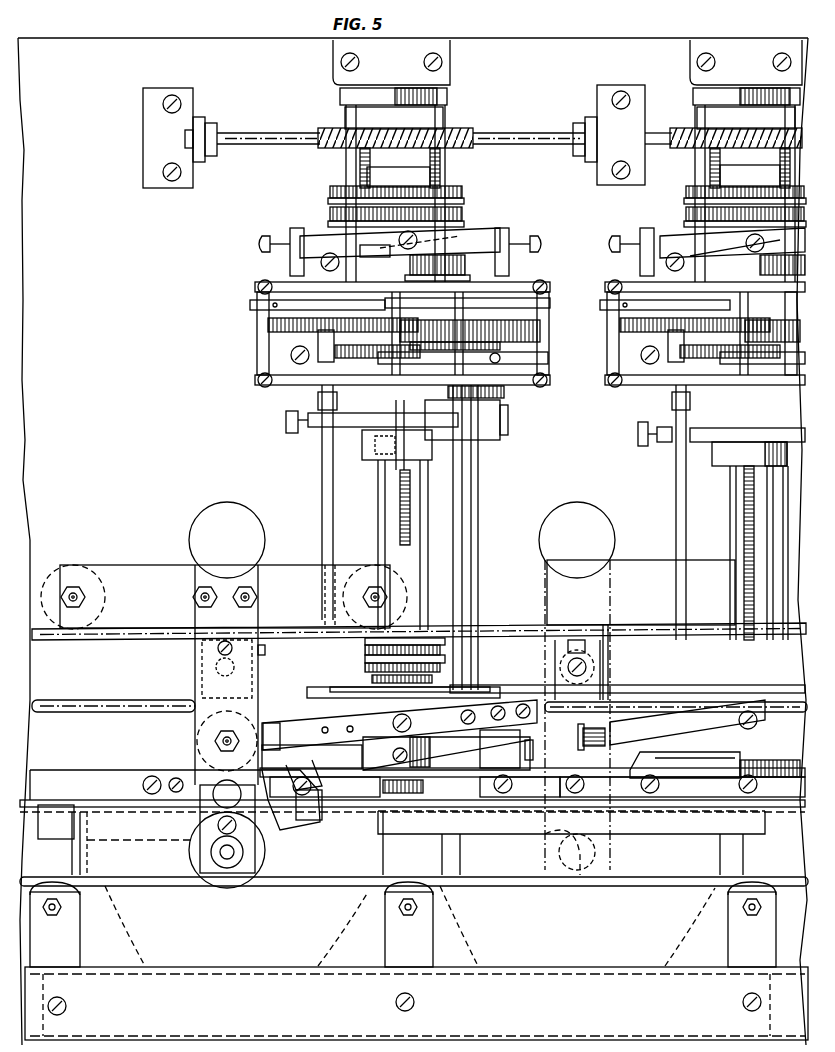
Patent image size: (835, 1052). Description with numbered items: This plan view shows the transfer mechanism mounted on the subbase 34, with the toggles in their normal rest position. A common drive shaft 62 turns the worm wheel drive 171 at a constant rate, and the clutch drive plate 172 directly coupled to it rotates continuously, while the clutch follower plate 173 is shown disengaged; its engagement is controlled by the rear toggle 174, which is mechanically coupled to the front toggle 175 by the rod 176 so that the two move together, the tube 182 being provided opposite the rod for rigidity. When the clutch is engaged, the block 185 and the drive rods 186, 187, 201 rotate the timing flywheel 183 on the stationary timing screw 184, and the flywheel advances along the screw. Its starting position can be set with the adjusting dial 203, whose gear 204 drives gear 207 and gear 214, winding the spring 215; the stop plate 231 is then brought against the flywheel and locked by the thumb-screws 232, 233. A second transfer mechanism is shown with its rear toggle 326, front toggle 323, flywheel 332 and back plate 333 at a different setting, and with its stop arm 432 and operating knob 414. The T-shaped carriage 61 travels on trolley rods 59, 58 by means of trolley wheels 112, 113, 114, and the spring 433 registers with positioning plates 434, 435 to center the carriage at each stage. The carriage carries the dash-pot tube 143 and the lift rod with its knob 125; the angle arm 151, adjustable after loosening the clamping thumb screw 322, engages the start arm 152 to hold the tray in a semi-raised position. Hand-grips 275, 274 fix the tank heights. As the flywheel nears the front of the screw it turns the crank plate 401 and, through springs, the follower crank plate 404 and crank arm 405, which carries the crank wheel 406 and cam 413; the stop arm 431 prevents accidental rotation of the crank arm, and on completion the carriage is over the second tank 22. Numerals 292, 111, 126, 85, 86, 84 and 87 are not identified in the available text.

The subbase 34 is at (154, 42).
The worm wheel drive 171 is at (440, 128).
The drive shaft 62 is at (527, 134).
The clutch drive plate 172 is at (448, 186).
The clutch follower plate 173 is at (448, 214).
The rear toggle 174 is at (440, 236).
The rod 176 is at (470, 262).
The rear toggle 326 is at (690, 253).
The spring 215 is at (255, 305).
The gear 214 is at (282, 326).
The gear 207 is at (335, 350).
The gear 204 is at (535, 332).
The block 185 is at (380, 360).
The adjusting dial 203 is at (500, 392).
The stop plate 231 is at (350, 420).
The thumb-screw 233 is at (290, 428).
The thumb-screw 232 is at (505, 432).
The enclosing tube 182 is at (324, 458).
The timing flywheel 183 is at (368, 452).
The drive rod 201 is at (406, 470).
The drive rod 186 is at (378, 492).
The drive rod 187 is at (440, 483).
The timing screw 184 is at (410, 516).
The back plate 333 is at (703, 428).
The flywheel 332 is at (722, 466).
The hand-grip 275 is at (240, 506).
The hand-grip 274 is at (590, 506).
The trolley wheel 112 is at (54, 578).
The carriage 61 is at (140, 570).
The trolley wheel 113 is at (392, 568).
The trolley rod 59 is at (105, 641).
The spring 433 is at (266, 650).
The positioning plate 434 is at (200, 678).
The start arm 152 is at (305, 705).
The trolley rod 58 is at (100, 715).
The trolley wheel 114 is at (205, 740).
The bracket 292 is at (92, 782).
The dash-pot tube 143 is at (214, 810).
The knob 125 is at (212, 852).
The angle arm 151 is at (286, 833).
The clamping thumb screw 322 is at (305, 826).
The rod 111 is at (315, 876).
The wheel 126 is at (227, 888).
The bracket 85 is at (82, 915).
The bracket 86 is at (436, 915).
The base 84 is at (452, 978).
The second tank 22 is at (678, 940).
The bracket 87 is at (726, 910).
The crank plate 401 is at (440, 650).
The follower crank plate 404 is at (440, 667).
The positioning plate 435 is at (596, 660).
The operating knob 414 is at (598, 728).
The front toggle 175 is at (517, 705).
The front toggle 323 is at (687, 722).
The stop arm 432 is at (685, 762).
The stop arm 431 is at (328, 770).
The crank wheel 406 is at (425, 786).
The cam 413 is at (506, 772).
The crank arm 405 is at (488, 790).